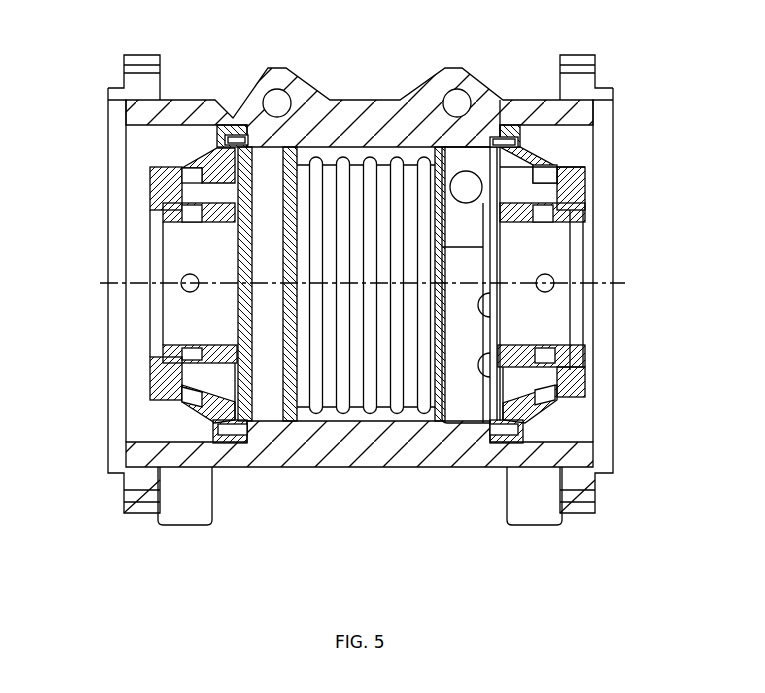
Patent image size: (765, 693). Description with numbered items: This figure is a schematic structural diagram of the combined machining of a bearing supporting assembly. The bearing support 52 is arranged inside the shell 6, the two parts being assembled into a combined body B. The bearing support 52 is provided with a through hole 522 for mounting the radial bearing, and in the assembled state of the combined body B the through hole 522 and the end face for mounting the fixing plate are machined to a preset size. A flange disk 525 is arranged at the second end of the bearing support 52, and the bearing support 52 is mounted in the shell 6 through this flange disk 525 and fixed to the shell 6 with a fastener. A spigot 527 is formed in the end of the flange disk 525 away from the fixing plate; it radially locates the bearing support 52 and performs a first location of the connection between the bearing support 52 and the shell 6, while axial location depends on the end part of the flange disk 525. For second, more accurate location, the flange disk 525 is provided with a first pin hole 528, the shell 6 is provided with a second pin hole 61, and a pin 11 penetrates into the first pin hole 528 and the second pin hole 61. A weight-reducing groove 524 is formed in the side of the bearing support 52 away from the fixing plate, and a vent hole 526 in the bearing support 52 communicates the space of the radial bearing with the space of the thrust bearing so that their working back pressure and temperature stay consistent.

The combined body B is at (617, 423).
The shell 6 is at (325, 435).
The pin 11 is at (245, 140).
The bearing support 52 is at (525, 420).
The second pin hole 61 is at (247, 140).
The through hole 522 is at (545, 310).
The weight-reducing groove 524 is at (198, 382).
The flange disk 525 is at (492, 136).
The vent hole 526 is at (552, 280).
The spigot 527 is at (503, 160).
The first pin hole 528 is at (222, 137).